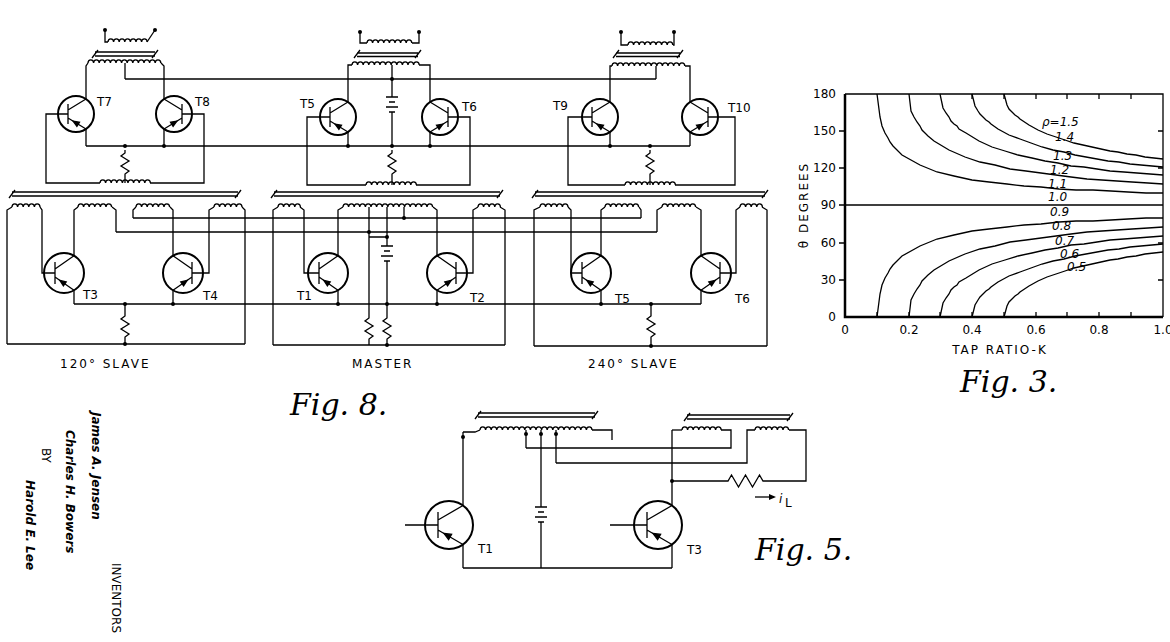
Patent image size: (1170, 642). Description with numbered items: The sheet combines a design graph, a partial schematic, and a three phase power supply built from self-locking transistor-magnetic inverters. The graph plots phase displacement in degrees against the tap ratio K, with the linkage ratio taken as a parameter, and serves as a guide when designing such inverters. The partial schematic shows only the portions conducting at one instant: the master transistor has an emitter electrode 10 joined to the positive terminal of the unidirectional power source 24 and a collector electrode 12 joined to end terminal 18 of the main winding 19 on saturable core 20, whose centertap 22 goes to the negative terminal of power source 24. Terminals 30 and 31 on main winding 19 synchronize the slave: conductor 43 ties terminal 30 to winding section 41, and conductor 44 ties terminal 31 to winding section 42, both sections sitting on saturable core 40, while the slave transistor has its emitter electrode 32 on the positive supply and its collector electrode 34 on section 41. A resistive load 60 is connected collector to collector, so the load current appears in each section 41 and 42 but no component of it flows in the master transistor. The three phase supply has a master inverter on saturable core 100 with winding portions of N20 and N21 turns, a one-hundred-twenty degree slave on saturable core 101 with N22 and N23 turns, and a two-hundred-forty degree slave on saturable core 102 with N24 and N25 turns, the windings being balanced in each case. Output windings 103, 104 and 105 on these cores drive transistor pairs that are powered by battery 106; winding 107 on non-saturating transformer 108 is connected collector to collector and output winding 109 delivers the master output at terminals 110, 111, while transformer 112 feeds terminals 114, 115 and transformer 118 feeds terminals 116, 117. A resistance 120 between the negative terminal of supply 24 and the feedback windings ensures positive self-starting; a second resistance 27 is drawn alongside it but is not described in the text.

In FIG. 5, the emitter electrode 10 is at (454, 548).
In FIG. 5, the collector electrode 12 is at (457, 504).
In FIG. 5, the end terminal 18 is at (461, 437).
In FIG. 5, the main winding 19 is at (567, 413).
In FIG. 5, the saturable core 20 is at (553, 412).
In FIG. 5, the centertap 22 is at (540, 442).
In FIG. 8, the unidirectional power source 24 is at (394, 258).
In FIG. 5, the unidirectional power source 24 is at (553, 513).
In FIG. 8, the resistor 27 is at (393, 329).
In FIG. 5, the terminal 30 is at (525, 439).
In FIG. 5, the terminal 31 is at (558, 437).
In FIG. 5, the emitter electrode 32 is at (656, 548).
In FIG. 5, the collector electrode 34 is at (664, 506).
In FIG. 5, the saturable core 40 is at (758, 416).
In FIG. 5, the winding section 41 is at (685, 428).
In FIG. 5, the winding section 42 is at (795, 429).
In FIG. 5, the conductor 43 is at (646, 466).
In FIG. 5, the conductor 44 is at (645, 446).
In FIG. 5, the resistive load 60 is at (758, 482).
In FIG. 8, the saturable core 100 is at (296, 191).
In FIG. 8, the saturable core 101 is at (228, 185).
In FIG. 8, the saturable core 102 is at (558, 191).
In FIG. 8, the output winding 103 is at (378, 182).
In FIG. 8, the output winding 104 is at (136, 181).
In FIG. 8, the output winding 105 is at (669, 183).
In FIG. 8, the battery 106 is at (386, 101).
In FIG. 8, the winding 107 is at (424, 67).
In FIG. 8, the transformer 108 is at (354, 54).
In FIG. 8, the output winding 109 is at (389, 32).
In FIG. 8, the terminal 110 is at (359, 32).
In FIG. 8, the terminal 111 is at (421, 33).
In FIG. 8, the transformer 112 is at (95, 53).
In FIG. 8, the terminal 114 is at (106, 30).
In FIG. 8, the terminal 115 is at (157, 30).
In FIG. 8, the terminal 116 is at (620, 32).
In FIG. 8, the terminal 117 is at (675, 33).
In FIG. 8, the transformer 118 is at (615, 55).
In FIG. 8, the resistance 120 is at (364, 323).
In FIG. 8, the number of turns N20 is at (357, 212).
In FIG. 8, the number of turns N21 is at (416, 212).
In FIG. 8, the number of turns N22 is at (95, 230).
In FIG. 8, the number of turns N23 is at (155, 212).
In FIG. 8, the number of turns N24 is at (621, 213).
In FIG. 8, the number of turns N25 is at (679, 230).